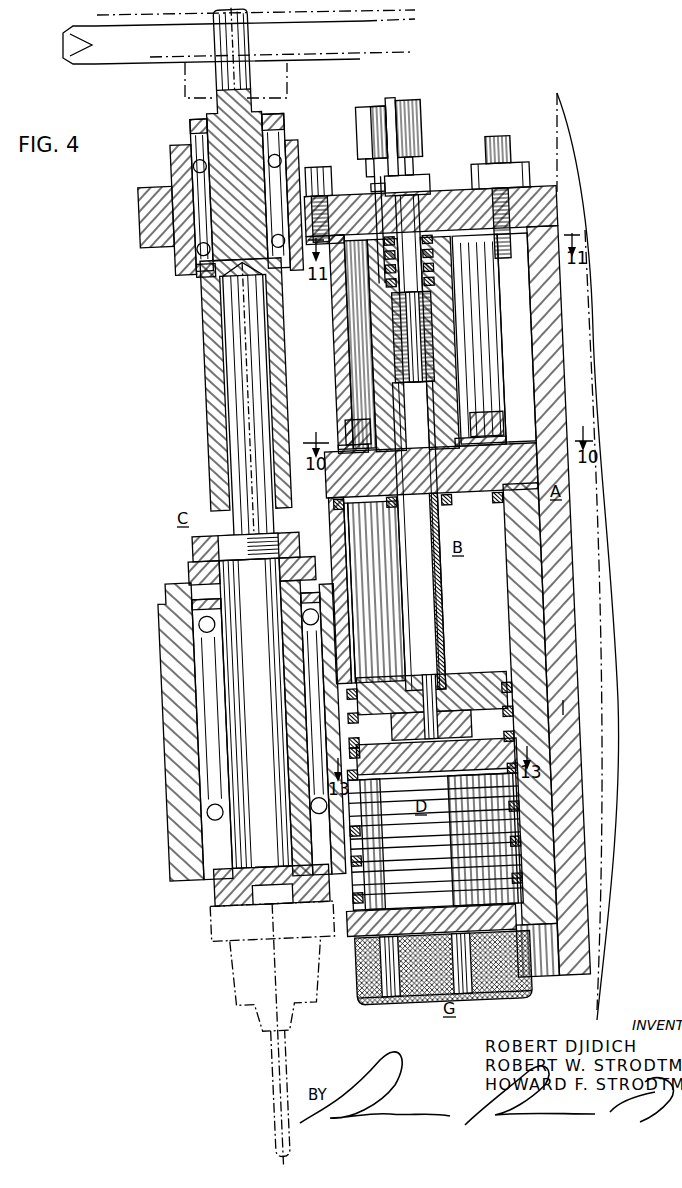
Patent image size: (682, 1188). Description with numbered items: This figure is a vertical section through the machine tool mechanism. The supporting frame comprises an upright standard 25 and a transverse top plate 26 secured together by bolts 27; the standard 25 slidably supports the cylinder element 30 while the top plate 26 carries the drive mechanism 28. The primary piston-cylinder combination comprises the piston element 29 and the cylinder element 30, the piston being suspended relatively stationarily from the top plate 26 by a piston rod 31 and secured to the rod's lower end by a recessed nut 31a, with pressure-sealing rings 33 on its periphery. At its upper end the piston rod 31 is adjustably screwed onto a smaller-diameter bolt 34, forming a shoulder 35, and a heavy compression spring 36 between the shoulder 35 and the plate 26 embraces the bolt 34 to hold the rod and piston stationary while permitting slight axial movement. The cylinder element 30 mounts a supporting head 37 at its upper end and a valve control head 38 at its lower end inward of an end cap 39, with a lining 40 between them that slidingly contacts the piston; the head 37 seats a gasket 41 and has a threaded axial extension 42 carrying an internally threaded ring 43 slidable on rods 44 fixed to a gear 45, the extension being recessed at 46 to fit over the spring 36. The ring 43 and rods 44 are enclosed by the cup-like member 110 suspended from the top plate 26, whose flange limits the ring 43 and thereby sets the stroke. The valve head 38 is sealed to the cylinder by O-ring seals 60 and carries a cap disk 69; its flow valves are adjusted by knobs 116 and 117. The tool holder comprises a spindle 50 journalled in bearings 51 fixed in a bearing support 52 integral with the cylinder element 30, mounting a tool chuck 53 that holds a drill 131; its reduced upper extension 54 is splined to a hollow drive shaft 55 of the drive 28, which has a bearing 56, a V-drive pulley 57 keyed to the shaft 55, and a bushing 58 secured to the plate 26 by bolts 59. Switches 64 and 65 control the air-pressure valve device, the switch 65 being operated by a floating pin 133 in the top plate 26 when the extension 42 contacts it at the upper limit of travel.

The upright standard 25 is at (563, 560).
The top plate 26 is at (453, 192).
The bolts 27 is at (512, 200).
The drive mechanism 28 is at (174, 166).
The piston element 29 is at (512, 702).
The cylinder element 30 is at (548, 628).
The piston rod 31 is at (437, 618).
The recessed nut 31a is at (450, 688).
The pressure-sealing rings 33 is at (512, 722).
The bolt 34 is at (418, 177).
The shoulder 35 is at (363, 292).
The compression spring 36 is at (375, 268).
The supporting head 37 is at (490, 474).
The valve control head 38 is at (440, 852).
The end cap 39 is at (350, 936).
The lining 40 is at (350, 606).
The gasket 41 is at (377, 592).
The axial extension 42 is at (445, 385).
The ring 43 is at (520, 222).
The rods 44 is at (365, 352).
The gear 45 is at (342, 436).
The recess 46 is at (483, 340).
The spindle 50 is at (258, 610).
The bearings 51 is at (203, 627).
The bearing support 52 is at (167, 767).
The tool chuck 53 is at (233, 936).
The upper extension 54 is at (236, 432).
The drive shaft 55 is at (248, 203).
The bearing 56 is at (195, 247).
The V-drive pulley 57 is at (180, 57).
The bushing 58 is at (190, 270).
The bolts 59 is at (316, 165).
The O-ring seals 60 is at (520, 857).
The switch 64 is at (416, 110).
The switch 65 is at (368, 124).
The cap disk 69 is at (472, 760).
The cup-like member 110 is at (480, 344).
The knob 116 is at (381, 1000).
The knob 117 is at (508, 985).
The drill 131 is at (270, 1092).
The floating pin 133 is at (388, 200).